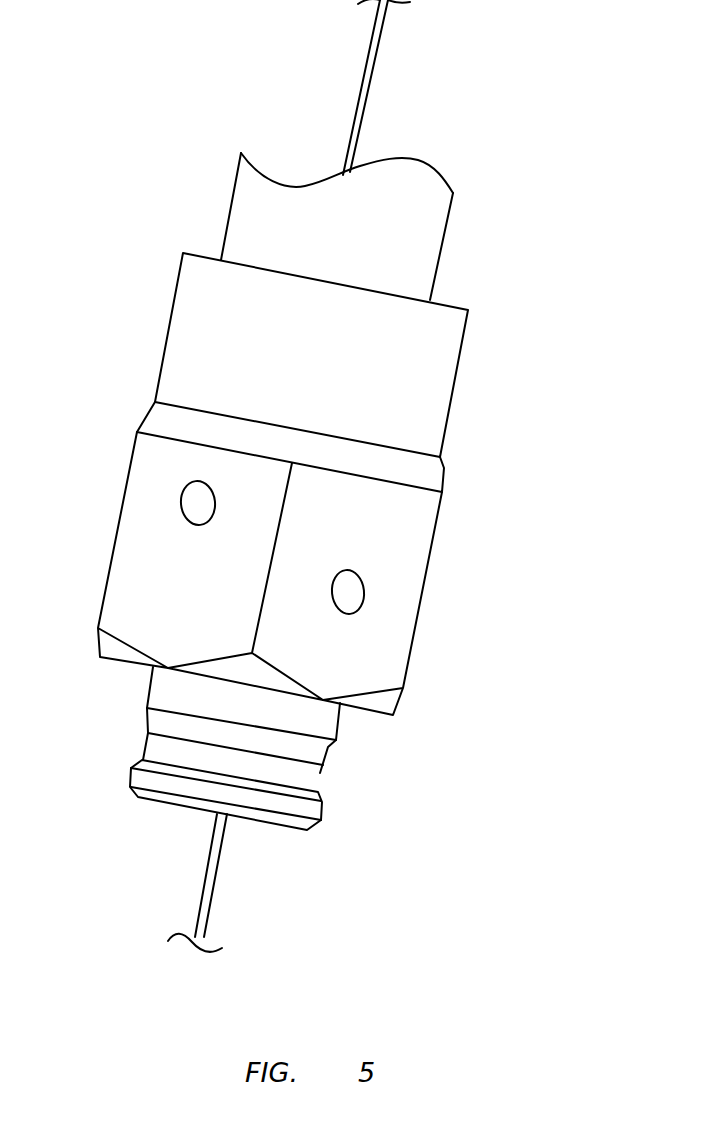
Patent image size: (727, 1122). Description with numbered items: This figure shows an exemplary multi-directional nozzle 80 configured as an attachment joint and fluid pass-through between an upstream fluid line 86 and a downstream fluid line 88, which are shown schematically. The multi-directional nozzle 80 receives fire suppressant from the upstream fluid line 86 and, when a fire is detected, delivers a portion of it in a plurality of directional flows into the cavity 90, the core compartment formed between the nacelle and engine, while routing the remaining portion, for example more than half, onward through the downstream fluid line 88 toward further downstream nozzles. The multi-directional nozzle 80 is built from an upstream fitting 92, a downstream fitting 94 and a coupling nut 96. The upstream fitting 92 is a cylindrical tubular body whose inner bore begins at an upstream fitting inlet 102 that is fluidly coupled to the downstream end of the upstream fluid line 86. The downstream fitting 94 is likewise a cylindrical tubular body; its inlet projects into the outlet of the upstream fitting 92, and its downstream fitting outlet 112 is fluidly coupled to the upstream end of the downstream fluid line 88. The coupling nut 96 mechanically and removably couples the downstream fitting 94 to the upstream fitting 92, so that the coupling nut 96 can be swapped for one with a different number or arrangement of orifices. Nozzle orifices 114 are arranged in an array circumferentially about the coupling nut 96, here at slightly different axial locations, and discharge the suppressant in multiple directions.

The multi-directional nozzle 80 is at (530, 280).
The upstream fluid line 86 is at (377, 60).
The downstream fluid line 88 is at (213, 890).
The cavity 90 is at (50, 404).
The upstream fitting 92 is at (212, 234).
The downstream fitting 94 is at (332, 774).
The coupling nut 96 is at (452, 513).
The upstream fitting inlet 102 is at (423, 192).
The downstream fitting outlet 112 is at (153, 805).
The nozzle orifices 114 is at (182, 503).